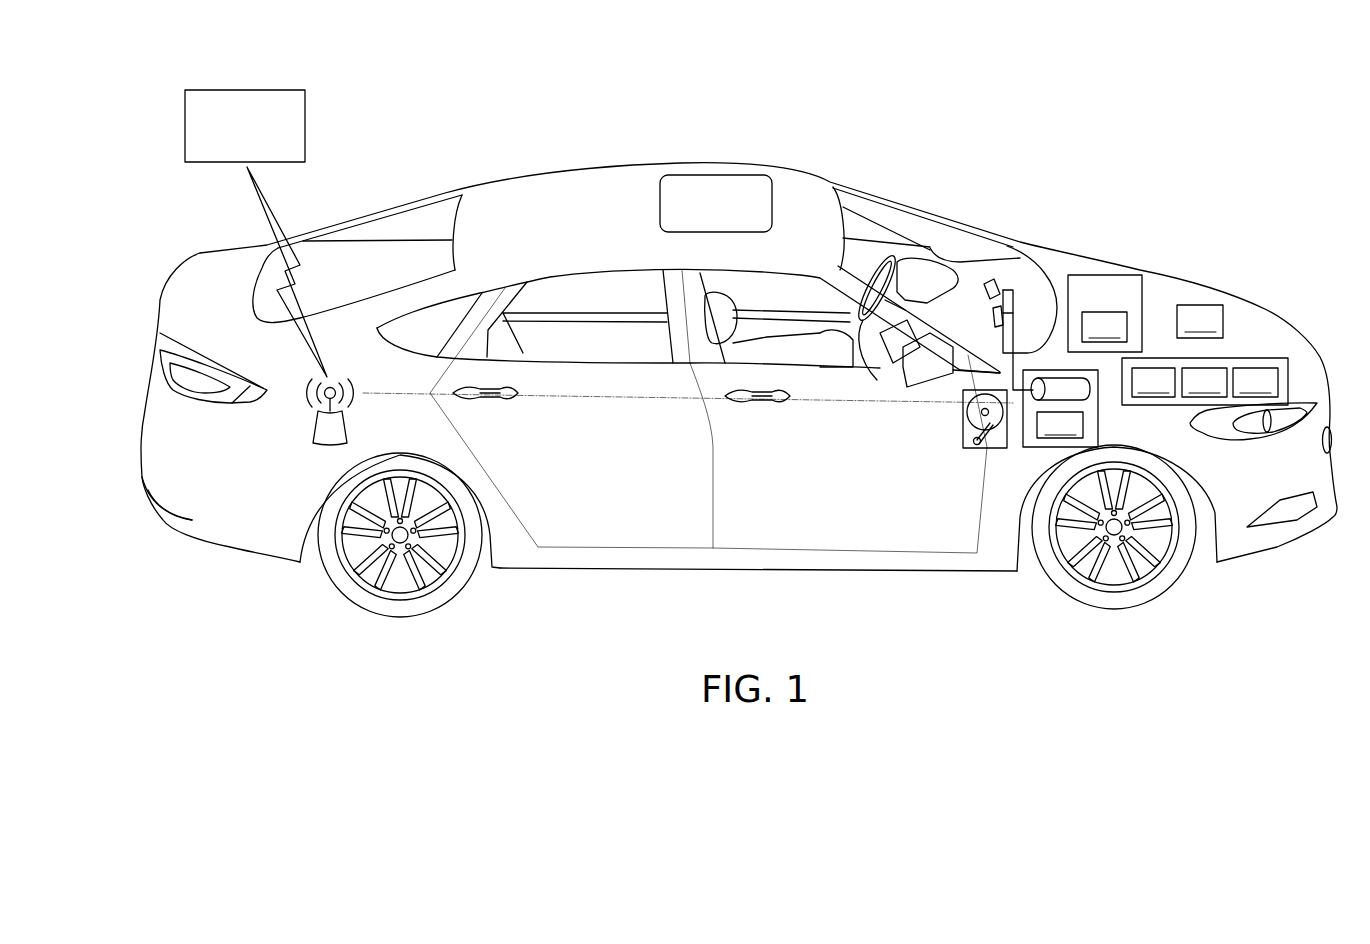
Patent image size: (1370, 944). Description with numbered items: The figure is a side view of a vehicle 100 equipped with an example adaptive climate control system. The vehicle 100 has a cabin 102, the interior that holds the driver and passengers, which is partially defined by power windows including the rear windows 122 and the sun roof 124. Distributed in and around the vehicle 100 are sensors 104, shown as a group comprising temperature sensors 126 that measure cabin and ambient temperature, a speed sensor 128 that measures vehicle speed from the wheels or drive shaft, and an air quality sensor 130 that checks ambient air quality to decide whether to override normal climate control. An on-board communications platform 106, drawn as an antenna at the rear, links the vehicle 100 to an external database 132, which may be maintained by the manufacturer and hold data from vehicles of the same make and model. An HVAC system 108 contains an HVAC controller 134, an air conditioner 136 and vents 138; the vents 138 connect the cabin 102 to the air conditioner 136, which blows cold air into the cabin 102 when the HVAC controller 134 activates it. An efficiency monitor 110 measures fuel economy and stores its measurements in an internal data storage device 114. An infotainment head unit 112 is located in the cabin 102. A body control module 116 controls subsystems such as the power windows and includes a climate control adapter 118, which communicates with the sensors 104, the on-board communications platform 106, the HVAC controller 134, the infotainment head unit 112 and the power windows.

The vehicle 100 is at (198, 250).
The cabin 102 is at (971, 273).
The sensors 104 is at (1208, 335).
The on-board communications platform 106 is at (317, 428).
The HVAC system 108 is at (1075, 435).
The efficiency monitor 110 is at (1200, 321).
The infotainment head unit 112 is at (880, 378).
The internal data storage device 114 is at (963, 430).
The body control module 116 is at (1105, 277).
The climate control adapter 118 is at (1104, 327).
The rear windows 122 is at (593, 343).
The sun roof 124 is at (693, 190).
The temperature sensors 126 is at (1153, 382).
The speed sensor 128 is at (1204, 382).
The air quality sensor 130 is at (1258, 358).
The external database 132 is at (185, 125).
The HVAC controller 134 is at (1030, 448).
The air conditioner 136 is at (1083, 388).
The vents 138 is at (1000, 285).